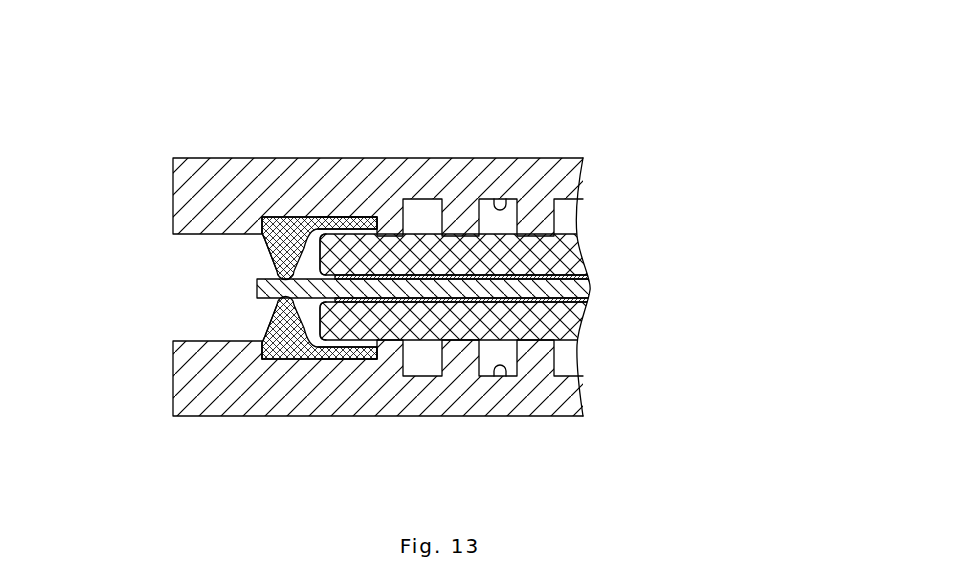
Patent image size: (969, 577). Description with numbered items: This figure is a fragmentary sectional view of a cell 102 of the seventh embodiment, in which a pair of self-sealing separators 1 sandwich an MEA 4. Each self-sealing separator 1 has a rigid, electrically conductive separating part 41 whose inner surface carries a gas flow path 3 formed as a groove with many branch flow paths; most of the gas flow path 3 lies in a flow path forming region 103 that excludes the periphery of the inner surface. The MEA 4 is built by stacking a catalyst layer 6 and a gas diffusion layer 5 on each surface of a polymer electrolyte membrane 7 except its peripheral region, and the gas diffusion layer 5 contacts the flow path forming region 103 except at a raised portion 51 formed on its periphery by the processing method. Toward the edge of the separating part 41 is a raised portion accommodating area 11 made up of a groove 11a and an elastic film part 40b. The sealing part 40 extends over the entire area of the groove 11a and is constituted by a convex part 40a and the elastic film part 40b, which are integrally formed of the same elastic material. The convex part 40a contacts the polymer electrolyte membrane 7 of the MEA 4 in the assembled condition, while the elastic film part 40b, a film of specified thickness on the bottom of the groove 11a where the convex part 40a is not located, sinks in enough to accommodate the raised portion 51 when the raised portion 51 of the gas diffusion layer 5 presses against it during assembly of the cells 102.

The cell 102 is at (138, 131).
The self-sealing separator 1 is at (545, 146).
The separating part 41 is at (583, 180).
The gas flow path 3 is at (500, 199).
The MEA 4 is at (667, 226).
The gas diffusion layer 5 is at (583, 258).
The catalyst layer 6 is at (585, 278).
The polymer electrolyte membrane 7 is at (255, 289).
The raised portion 51 is at (345, 240).
The flow path forming region 103 is at (470, 245).
The sealing part 40 is at (268, 254).
The convex part 40a is at (276, 226).
The elastic film part 40b is at (324, 218).
The raised portion accommodating area 11 is at (362, 92).
The groove 11a is at (352, 228).